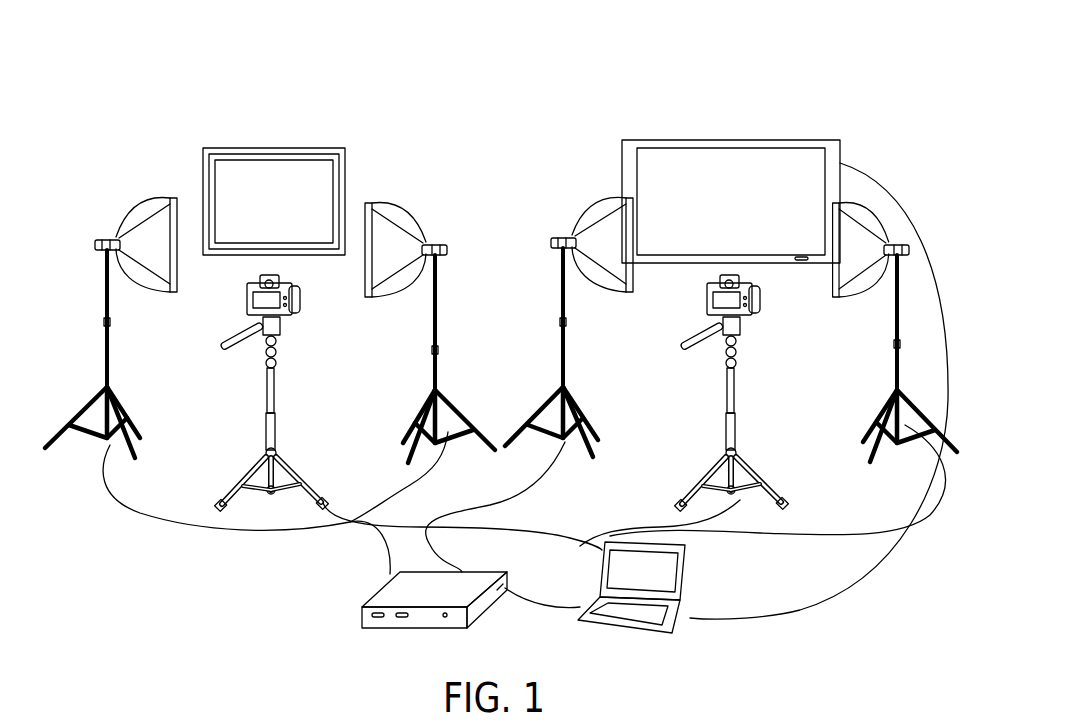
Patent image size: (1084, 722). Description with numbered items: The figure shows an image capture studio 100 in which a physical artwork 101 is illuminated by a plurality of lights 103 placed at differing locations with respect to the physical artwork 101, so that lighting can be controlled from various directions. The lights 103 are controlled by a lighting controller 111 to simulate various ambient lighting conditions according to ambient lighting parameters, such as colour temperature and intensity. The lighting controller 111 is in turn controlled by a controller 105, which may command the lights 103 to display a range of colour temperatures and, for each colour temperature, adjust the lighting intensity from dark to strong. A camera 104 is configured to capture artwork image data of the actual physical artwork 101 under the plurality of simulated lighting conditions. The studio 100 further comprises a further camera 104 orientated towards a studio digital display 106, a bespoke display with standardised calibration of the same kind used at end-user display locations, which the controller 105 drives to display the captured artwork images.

The image capture studio 100 is at (792, 80).
The physical artwork 101 is at (203, 155).
The lights 103 is at (130, 213).
The camera 104 is at (248, 300).
The controller 105 is at (590, 608).
The studio digital display 106 is at (622, 152).
The lighting controller 111 is at (363, 603).